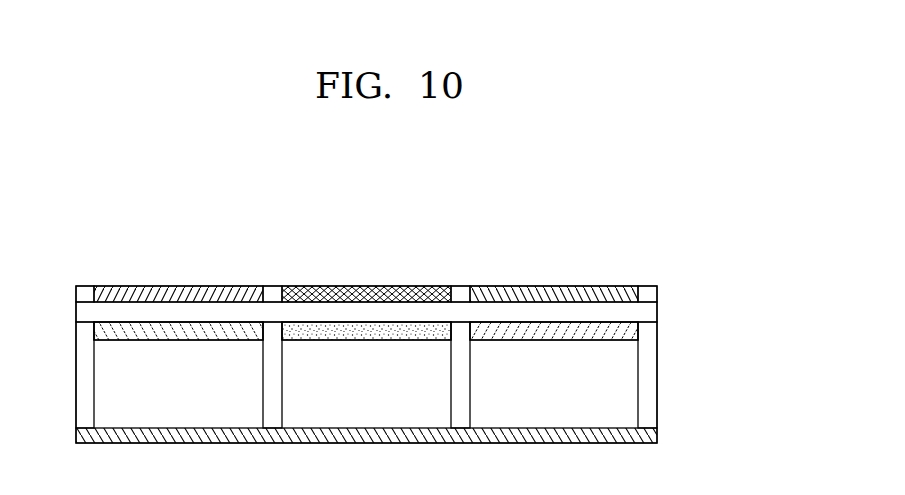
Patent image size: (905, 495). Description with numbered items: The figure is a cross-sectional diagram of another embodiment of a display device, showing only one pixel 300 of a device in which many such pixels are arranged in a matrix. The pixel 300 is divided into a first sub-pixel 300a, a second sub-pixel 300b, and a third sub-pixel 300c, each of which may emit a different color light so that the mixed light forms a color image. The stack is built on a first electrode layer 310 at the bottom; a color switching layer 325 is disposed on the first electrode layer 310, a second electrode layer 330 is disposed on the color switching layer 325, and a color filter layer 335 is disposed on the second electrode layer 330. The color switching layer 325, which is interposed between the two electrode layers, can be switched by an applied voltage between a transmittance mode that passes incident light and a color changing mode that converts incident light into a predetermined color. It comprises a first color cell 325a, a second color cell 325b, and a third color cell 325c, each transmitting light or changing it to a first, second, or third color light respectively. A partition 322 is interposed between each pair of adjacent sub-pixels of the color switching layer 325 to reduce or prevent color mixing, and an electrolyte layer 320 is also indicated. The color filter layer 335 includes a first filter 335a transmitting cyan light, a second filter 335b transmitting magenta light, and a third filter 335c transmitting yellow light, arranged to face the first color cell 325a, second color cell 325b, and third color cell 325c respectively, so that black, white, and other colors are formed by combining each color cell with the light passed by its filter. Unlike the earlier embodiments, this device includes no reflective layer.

The pixel 300 is at (678, 222).
The first sub-pixel 300a is at (95, 450).
The second sub-pixel 300b is at (451, 450).
The third sub-pixel 300c is at (470, 450).
The first electrode layer 310 is at (653, 438).
The electrolyte layer 320 is at (635, 393).
The partition 322 is at (655, 354).
The color switching layer 325 is at (366, 243).
The first color cell 325a is at (208, 328).
The second color cell 325b is at (397, 332).
The third color cell 325c is at (554, 265).
The second electrode layer 330 is at (655, 313).
The color filter layer 335 is at (408, 266).
The first filter 335a is at (150, 286).
The second filter 335b is at (337, 286).
The third filter 335c is at (525, 286).